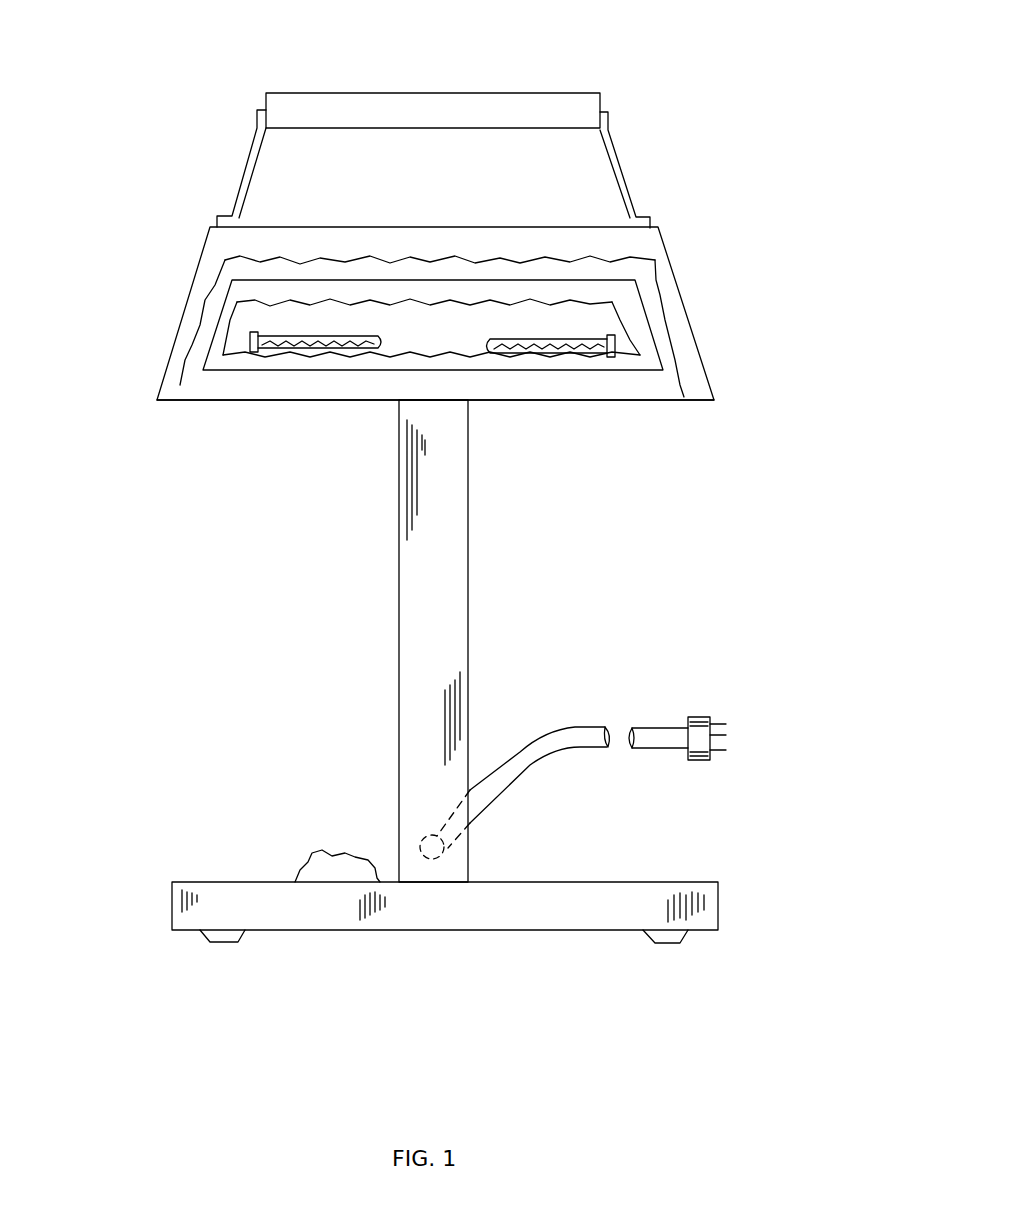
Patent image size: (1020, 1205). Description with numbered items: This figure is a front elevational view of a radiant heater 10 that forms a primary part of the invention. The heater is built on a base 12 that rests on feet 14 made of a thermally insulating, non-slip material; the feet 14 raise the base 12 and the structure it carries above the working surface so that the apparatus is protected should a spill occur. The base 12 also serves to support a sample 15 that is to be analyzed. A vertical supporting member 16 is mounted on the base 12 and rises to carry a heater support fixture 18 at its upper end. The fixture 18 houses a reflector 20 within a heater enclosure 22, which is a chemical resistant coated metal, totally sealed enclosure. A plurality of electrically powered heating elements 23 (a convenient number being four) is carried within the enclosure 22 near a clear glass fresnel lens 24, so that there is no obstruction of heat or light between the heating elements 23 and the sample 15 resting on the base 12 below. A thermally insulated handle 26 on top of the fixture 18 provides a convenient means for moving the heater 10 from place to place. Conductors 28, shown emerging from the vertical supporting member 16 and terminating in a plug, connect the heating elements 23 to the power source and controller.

The radiant heater 10 is at (733, 434).
The base 12 is at (680, 882).
The feet 14 is at (218, 942).
The sample 15 is at (328, 850).
The vertical supporting member 16 is at (393, 652).
The heater support fixture 18 is at (624, 150).
The reflector 20 is at (637, 290).
The heater enclosure 22 is at (193, 376).
The heating elements 23 is at (265, 357).
The fresnel lens 24 is at (550, 401).
The handle 26 is at (530, 93).
The conductors 28 is at (575, 727).